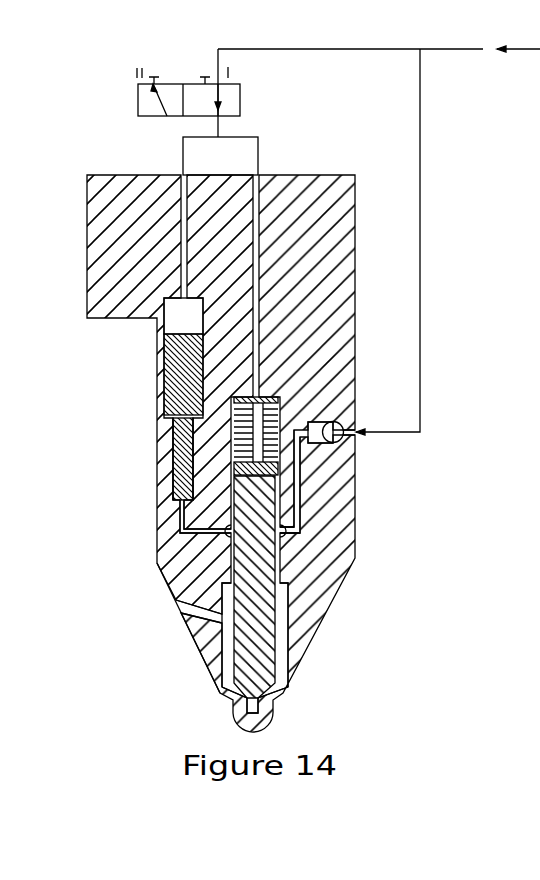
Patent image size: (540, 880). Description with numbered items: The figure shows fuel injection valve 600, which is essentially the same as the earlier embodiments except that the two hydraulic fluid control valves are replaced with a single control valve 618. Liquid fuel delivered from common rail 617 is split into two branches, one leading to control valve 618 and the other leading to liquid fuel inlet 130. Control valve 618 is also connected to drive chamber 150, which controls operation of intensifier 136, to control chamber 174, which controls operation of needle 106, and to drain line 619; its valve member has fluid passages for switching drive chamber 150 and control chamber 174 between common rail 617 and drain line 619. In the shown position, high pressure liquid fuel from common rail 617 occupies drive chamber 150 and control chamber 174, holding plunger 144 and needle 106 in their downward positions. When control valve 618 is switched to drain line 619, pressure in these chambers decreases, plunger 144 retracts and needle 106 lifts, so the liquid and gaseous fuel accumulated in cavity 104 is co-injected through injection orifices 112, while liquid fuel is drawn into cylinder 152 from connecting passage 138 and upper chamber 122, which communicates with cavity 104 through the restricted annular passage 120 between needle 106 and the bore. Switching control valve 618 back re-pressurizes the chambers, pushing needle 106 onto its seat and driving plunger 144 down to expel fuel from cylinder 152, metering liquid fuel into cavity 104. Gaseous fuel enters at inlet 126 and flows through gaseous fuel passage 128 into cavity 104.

The fuel injection valve 600 is at (320, 157).
The common rail 617 is at (440, 51).
The control valve 618 is at (240, 100).
The drain line 619 is at (154, 74).
The drive chamber 150 is at (180, 322).
The plunger 144 is at (172, 380).
The liquid fuel intensifier 136 is at (172, 437).
The cylinder 152 is at (172, 453).
The connecting passage 138 is at (180, 521).
The control chamber 174 is at (284, 398).
The liquid fuel inlet 130 is at (353, 436).
The upper chamber 122 is at (284, 542).
The annular passage 120 is at (284, 582).
The needle 106 is at (260, 642).
The cavity 104 is at (266, 700).
The injection orifices 112 is at (240, 705).
The inlet 126 is at (177, 603).
The gaseous fuel passage 128 is at (200, 638).